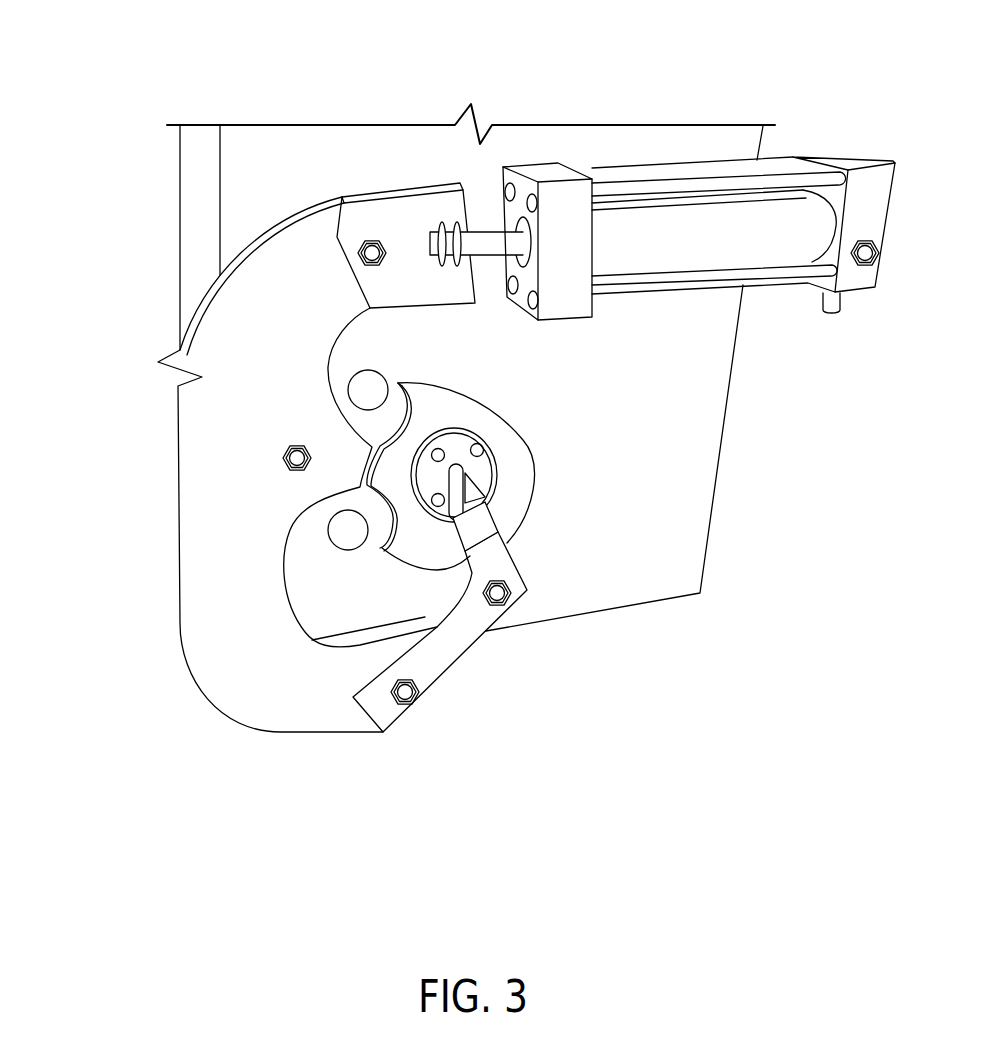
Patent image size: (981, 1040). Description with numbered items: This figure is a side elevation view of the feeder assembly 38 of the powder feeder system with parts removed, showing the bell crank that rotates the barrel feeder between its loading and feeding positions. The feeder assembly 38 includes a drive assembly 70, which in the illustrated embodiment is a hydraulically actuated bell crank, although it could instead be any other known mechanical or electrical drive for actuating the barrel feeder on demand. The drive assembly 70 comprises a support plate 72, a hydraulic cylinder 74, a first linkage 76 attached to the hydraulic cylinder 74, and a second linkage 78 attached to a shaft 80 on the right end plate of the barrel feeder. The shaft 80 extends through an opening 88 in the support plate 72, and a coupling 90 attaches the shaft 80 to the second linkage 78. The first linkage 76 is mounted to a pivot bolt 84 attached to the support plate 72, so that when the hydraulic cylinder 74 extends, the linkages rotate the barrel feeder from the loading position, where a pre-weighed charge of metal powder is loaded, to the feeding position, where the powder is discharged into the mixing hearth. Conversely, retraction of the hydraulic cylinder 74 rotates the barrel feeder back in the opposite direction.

The feeder assembly 38 is at (582, 97).
The drive assembly 70 is at (131, 197).
The support plate 72 is at (682, 508).
The hydraulic cylinder 74 is at (876, 172).
The first linkage 76 is at (292, 268).
The second linkage 78 is at (457, 638).
The shaft 80 is at (473, 450).
The pivot bolt 84 is at (297, 470).
The opening 88 is at (498, 470).
The coupling 90 is at (477, 513).